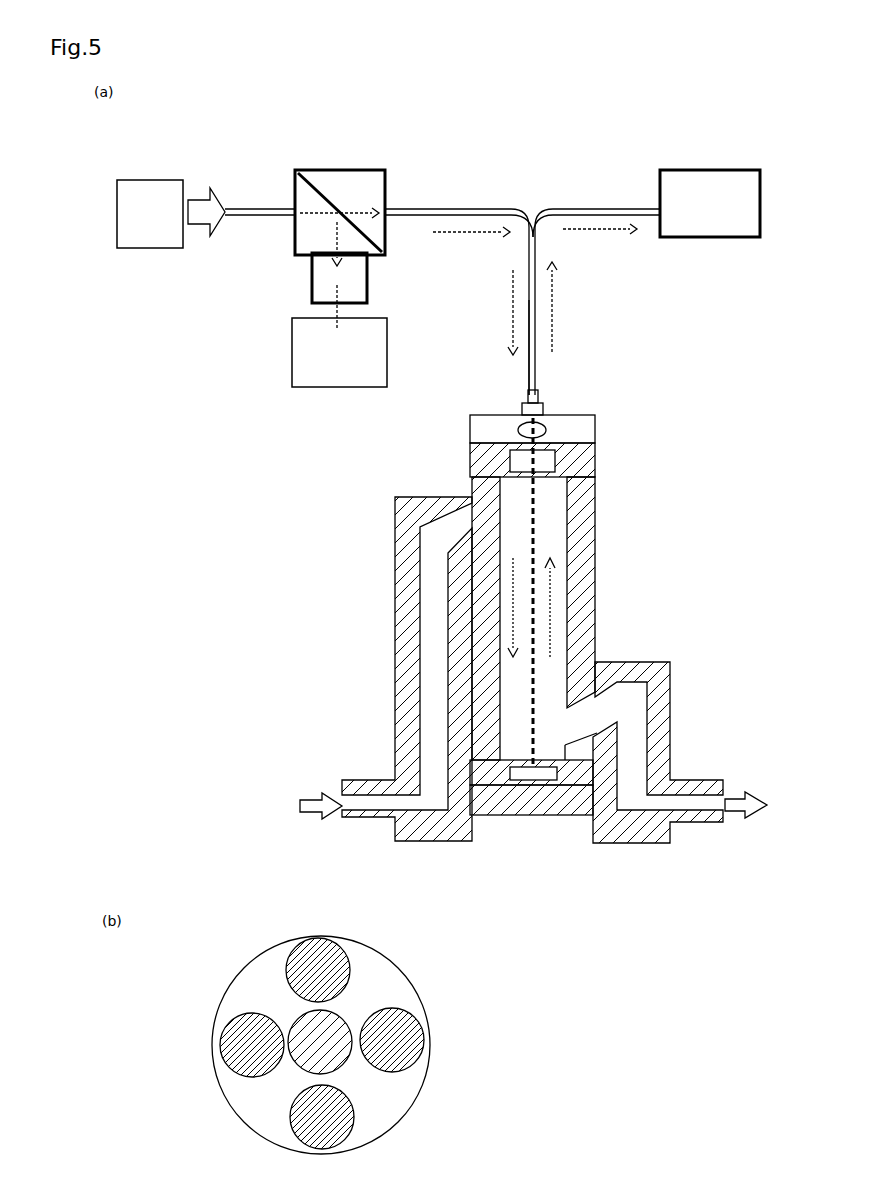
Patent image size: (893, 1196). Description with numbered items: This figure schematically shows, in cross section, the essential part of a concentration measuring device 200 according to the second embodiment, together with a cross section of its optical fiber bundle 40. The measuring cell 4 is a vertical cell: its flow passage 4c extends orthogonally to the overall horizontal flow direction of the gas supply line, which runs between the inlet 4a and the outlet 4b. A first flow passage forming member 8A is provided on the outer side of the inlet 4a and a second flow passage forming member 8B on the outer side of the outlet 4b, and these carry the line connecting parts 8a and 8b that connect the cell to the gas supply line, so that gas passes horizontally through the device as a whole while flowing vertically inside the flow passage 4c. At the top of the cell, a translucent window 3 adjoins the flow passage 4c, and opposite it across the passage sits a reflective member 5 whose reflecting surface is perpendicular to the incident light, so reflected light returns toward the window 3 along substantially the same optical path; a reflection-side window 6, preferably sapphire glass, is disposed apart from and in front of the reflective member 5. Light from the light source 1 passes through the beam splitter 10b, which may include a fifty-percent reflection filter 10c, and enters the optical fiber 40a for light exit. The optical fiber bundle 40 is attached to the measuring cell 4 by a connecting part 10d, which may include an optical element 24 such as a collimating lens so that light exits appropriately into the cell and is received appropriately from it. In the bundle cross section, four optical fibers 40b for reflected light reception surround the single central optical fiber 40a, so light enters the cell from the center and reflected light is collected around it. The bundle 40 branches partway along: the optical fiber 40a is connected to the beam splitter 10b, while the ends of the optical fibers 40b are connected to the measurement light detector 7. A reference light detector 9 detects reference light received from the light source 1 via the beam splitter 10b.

The light source 1 is at (150, 250).
The translucent window 3 is at (596, 455).
The measuring cell 4 is at (600, 520).
The inlet 4a is at (498, 513).
The outlet 4b is at (562, 727).
The flow passage 4c is at (550, 547).
The reflective member 5 is at (520, 818).
The reflection-side window 6 is at (553, 818).
The measurement light detector 7 is at (703, 240).
The first flow passage forming member 8A is at (395, 648).
The second flow passage forming member 8B is at (653, 662).
The line connecting part 8a is at (364, 782).
The line connecting part 8b is at (690, 780).
The reference light detector 9 is at (325, 390).
The beam splitter 10b is at (333, 168).
The 50% reflection filter 10c is at (387, 240).
The connecting part 10d is at (547, 400).
The optical element 24 is at (523, 417).
The optical fiber bundle 40 is at (537, 368).
The optical fiber for light exit 40a is at (467, 210).
The optical fiber for reflected light reception 40b is at (580, 208).
The concentration measuring device 200 is at (615, 150).